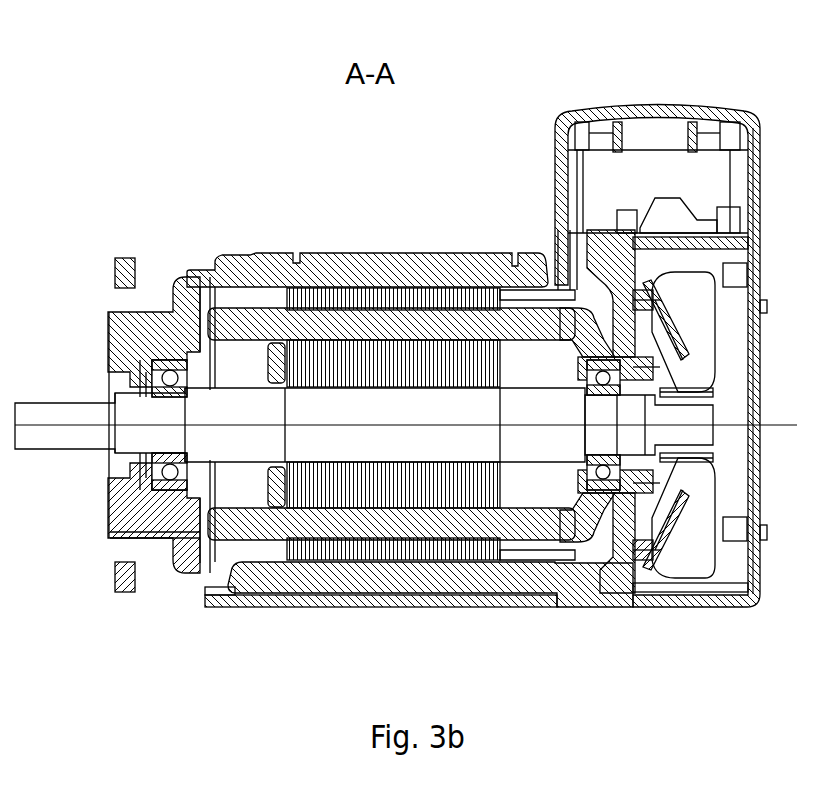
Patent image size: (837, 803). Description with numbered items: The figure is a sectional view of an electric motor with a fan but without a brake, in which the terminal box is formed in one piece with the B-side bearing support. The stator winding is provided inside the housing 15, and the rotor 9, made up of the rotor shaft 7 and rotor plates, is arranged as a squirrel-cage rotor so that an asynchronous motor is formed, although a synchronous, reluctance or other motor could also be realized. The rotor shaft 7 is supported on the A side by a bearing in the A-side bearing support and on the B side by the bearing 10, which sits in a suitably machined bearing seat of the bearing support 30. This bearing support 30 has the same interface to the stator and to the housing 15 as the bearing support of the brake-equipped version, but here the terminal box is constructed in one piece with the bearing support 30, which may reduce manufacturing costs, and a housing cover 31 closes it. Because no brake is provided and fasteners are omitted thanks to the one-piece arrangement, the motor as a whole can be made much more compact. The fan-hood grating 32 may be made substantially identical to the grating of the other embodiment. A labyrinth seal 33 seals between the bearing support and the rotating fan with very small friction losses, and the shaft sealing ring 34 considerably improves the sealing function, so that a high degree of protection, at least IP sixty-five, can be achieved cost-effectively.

The rotor shaft 7 is at (221, 442).
The rotor 9 is at (323, 487).
The B-side bearing 10 is at (568, 318).
The housing 15 is at (318, 275).
The bearing support 30 is at (553, 283).
The housing cover 31 is at (648, 100).
The fan-hood grating 32 is at (758, 408).
The labyrinth seal 33 is at (645, 490).
The shaft sealing ring 34 is at (632, 457).